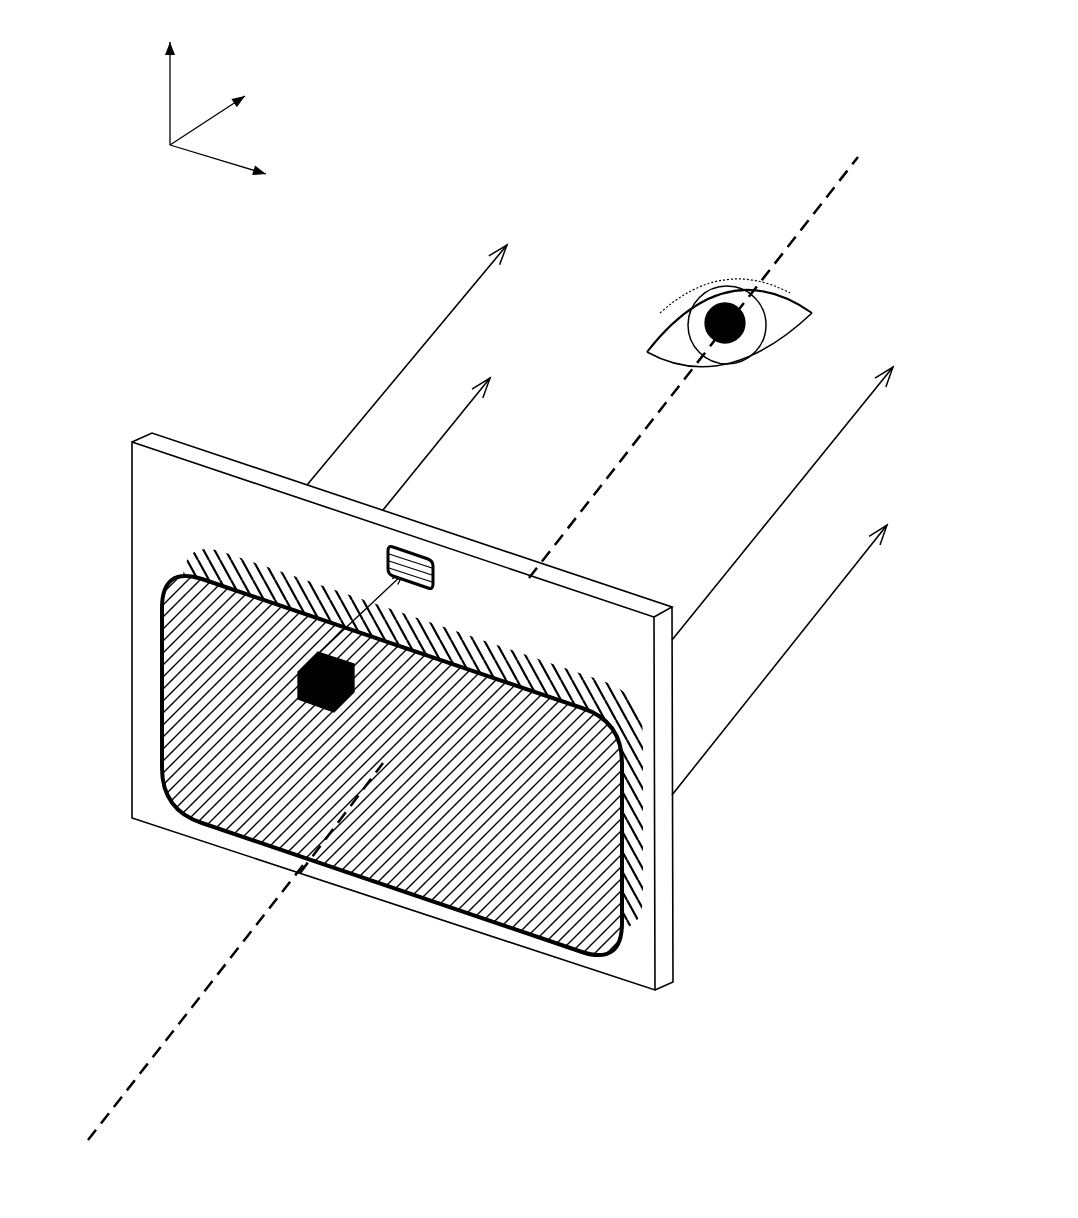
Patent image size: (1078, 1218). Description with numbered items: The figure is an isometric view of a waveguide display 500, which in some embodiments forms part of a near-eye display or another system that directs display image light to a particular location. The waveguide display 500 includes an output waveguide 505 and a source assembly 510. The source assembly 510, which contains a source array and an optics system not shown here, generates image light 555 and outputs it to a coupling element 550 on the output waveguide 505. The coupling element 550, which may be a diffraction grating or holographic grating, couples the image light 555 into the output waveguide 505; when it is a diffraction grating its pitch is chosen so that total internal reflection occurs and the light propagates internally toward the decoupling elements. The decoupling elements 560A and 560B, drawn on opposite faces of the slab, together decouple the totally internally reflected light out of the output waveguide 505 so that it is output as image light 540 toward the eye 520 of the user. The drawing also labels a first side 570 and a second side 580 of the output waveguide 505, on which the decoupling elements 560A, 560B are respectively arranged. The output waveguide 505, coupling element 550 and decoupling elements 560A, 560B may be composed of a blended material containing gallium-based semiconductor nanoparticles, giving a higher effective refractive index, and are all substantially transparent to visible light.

The waveguide display 500 is at (70, 30).
The output waveguide 505 is at (673, 825).
The source assembly 510 is at (353, 692).
The eye 520 is at (729, 293).
The image light 540 is at (433, 332).
The coupling element 550 is at (386, 545).
The image light 555 is at (392, 584).
The decoupling element 560A is at (240, 818).
The decoupling element 560B is at (643, 860).
The first side 570 is at (625, 960).
The second side 580 is at (743, 887).